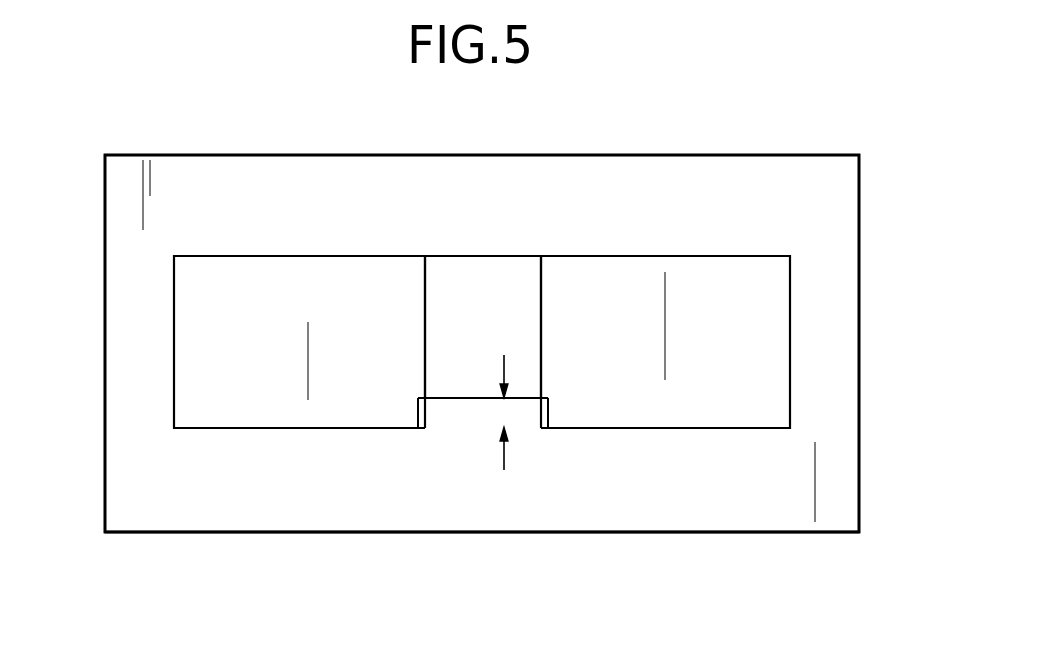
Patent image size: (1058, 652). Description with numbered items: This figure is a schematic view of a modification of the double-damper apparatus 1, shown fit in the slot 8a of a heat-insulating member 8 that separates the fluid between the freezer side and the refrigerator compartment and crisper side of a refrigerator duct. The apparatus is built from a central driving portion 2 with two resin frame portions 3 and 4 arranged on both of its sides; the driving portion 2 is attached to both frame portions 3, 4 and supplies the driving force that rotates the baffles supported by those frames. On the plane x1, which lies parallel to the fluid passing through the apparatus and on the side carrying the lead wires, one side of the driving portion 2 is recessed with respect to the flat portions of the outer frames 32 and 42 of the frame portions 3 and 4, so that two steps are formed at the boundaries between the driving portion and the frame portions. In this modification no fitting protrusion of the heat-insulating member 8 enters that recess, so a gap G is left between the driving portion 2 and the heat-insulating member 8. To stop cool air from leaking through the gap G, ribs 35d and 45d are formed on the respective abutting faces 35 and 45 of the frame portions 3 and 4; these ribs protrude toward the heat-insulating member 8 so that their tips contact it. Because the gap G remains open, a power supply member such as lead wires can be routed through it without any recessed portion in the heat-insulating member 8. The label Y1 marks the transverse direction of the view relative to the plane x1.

The double-damper apparatus 1 is at (836, 242).
The heat-insulating member 8 is at (780, 172).
The slot 8a is at (458, 420).
The driving portion 2 is at (485, 268).
The frame portion 3 is at (755, 415).
The outer frame 32 is at (675, 428).
The abutting face 35 is at (543, 277).
The rib 35d is at (550, 414).
The frame portion 4 is at (210, 410).
The outer frame 42 is at (260, 430).
The abutting face 45 is at (423, 277).
The rib 45d is at (416, 414).
The gap G is at (504, 398).
The plane X1 x1 is at (324, 492).
The y-axis direction Y1 is at (705, 423).